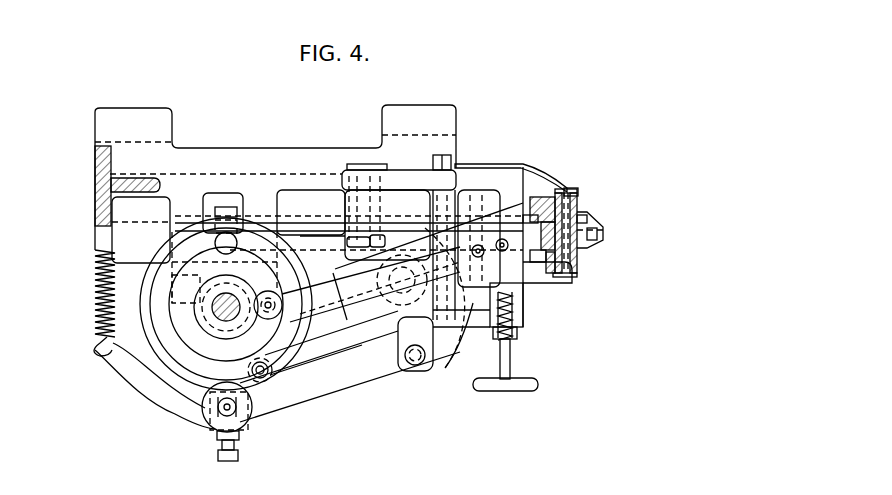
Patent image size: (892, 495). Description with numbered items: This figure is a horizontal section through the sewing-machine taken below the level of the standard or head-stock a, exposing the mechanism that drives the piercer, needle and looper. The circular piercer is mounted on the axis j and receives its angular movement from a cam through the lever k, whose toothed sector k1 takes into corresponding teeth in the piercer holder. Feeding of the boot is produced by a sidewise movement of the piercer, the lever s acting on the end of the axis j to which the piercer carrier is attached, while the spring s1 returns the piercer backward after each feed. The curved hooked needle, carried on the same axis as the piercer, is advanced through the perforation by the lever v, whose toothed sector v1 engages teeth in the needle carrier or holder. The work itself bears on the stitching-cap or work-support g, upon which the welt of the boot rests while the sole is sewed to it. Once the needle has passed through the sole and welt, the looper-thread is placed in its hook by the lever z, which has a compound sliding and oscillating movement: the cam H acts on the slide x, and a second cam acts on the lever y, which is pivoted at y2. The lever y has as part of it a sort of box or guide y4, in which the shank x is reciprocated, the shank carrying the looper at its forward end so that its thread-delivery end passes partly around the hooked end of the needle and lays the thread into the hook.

The standard or head-stock a is at (333, 236).
The lever v is at (349, 220).
The lever k is at (321, 233).
The box or guide y4 is at (355, 273).
The slide or shank x is at (357, 284).
The lever y is at (323, 346).
The pivot y2 is at (402, 290).
The lever s is at (283, 355).
The cam H is at (226, 304).
The spring s1 is at (515, 166).
The toothed sector v1 is at (535, 183).
The stitching-cap or work-support g is at (597, 213).
The lever z is at (603, 250).
The axis j is at (566, 277).
The toothed sector k1 is at (540, 267).